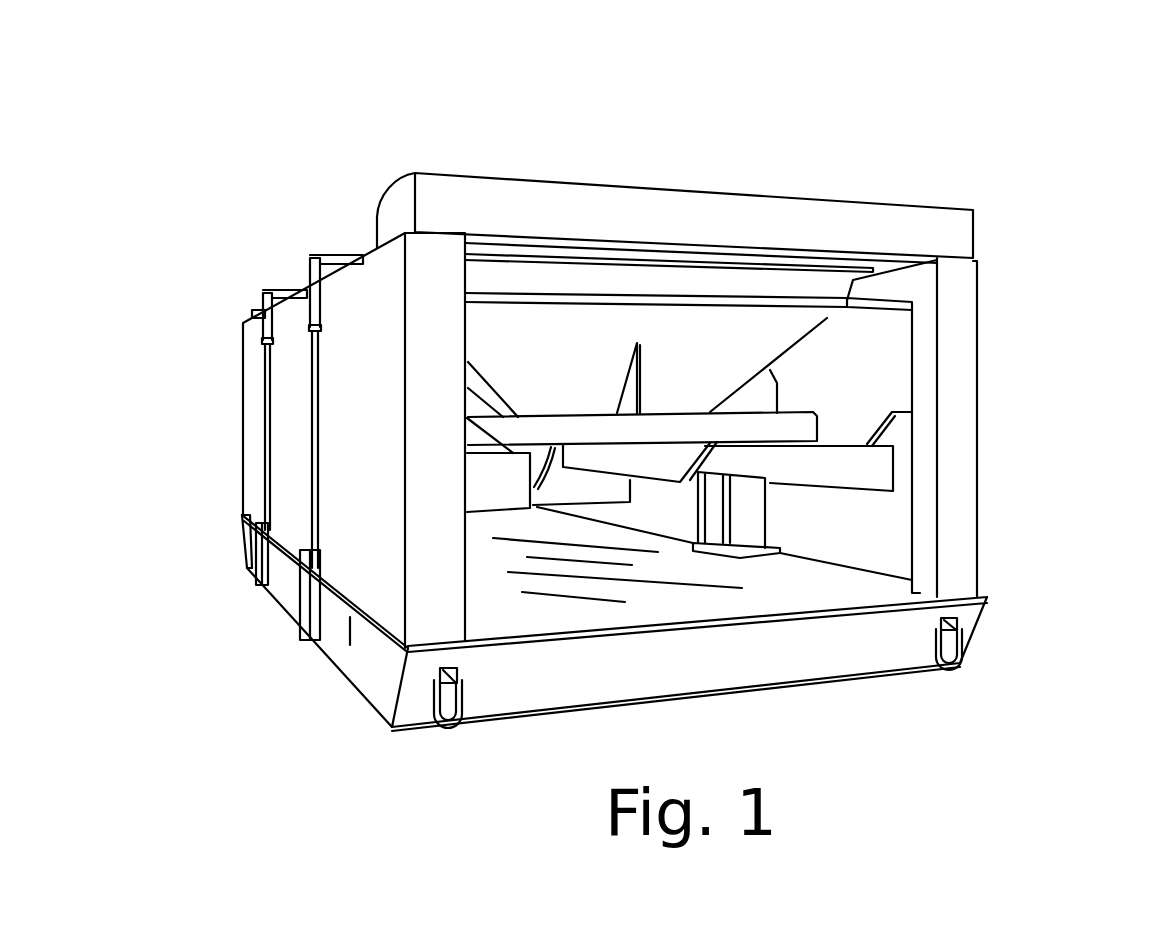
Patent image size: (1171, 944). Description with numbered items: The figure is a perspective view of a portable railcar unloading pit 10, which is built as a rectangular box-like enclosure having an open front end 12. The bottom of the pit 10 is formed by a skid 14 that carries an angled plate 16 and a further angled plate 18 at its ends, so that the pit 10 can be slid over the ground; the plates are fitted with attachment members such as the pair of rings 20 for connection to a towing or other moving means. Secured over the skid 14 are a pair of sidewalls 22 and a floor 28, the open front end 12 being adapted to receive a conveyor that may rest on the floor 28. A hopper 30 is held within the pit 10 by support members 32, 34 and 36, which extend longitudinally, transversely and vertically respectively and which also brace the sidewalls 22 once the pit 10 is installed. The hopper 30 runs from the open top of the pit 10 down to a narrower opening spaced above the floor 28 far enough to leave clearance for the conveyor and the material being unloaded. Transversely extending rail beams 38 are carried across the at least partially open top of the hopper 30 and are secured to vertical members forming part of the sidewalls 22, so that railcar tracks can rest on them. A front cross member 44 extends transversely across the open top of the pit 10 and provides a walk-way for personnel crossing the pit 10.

The portable railcar unloading pit 10 is at (572, 157).
The open front end 12 is at (932, 284).
The skid 14 is at (345, 660).
The angled plate 16 is at (703, 679).
The angled plate 18 is at (243, 540).
The rings 20 is at (443, 733).
The sidewalls 22 is at (388, 431).
The floor 28 is at (823, 602).
The hopper 30 is at (700, 328).
The longitudinal support member 32 is at (848, 479).
The transverse support member 34 is at (665, 443).
The vertical support member 36 is at (757, 521).
The rail beams 38 is at (328, 257).
The front cross member 44 is at (442, 200).